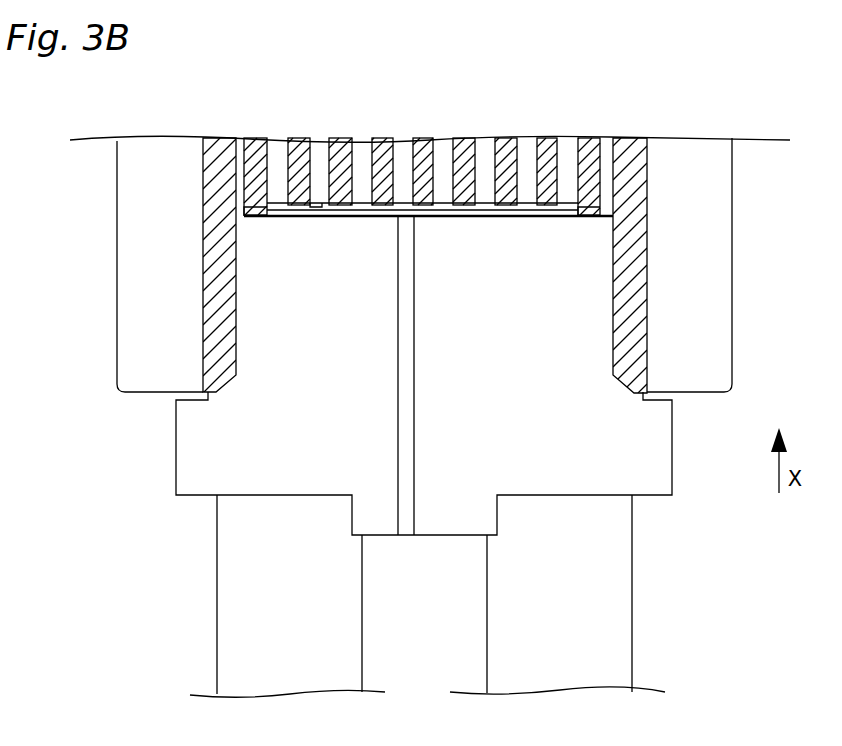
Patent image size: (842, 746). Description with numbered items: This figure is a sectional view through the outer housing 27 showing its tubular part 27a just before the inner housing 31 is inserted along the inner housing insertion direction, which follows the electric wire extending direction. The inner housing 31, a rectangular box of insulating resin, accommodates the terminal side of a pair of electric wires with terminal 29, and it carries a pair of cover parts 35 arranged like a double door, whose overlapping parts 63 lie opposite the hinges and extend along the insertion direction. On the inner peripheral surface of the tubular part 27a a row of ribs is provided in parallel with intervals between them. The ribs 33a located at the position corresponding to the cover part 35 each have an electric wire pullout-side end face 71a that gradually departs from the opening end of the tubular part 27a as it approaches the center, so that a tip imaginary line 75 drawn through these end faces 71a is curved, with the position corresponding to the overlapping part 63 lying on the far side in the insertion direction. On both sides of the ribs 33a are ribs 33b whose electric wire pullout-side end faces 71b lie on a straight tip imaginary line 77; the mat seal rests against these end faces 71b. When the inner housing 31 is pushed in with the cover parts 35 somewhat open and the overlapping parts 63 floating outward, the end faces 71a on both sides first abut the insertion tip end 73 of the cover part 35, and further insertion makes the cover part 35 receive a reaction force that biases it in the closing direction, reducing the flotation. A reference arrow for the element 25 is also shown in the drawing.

The leg portion 25 is at (216, 548).
The outer housing 27 is at (699, 402).
The tubular part 27a is at (165, 278).
The electric wire with terminal 29 is at (294, 578).
The inner housing 31 is at (171, 508).
The ribs 33a is at (547, 153).
The ribs 33b is at (259, 147).
The cover part 35 is at (245, 442).
The overlapping part 63 is at (409, 306).
The electric wire pullout-side end face 71a is at (366, 216).
The electric wire pullout-side end face 71b is at (265, 218).
The insertion tip end 73 is at (495, 208).
The tip imaginary line 75 is at (521, 212).
The straight tip imaginary line 77 is at (215, 247).